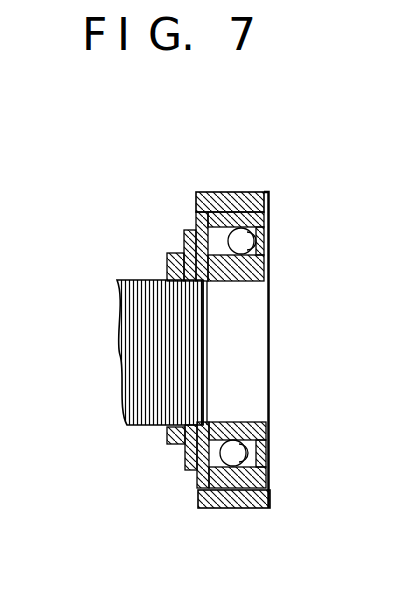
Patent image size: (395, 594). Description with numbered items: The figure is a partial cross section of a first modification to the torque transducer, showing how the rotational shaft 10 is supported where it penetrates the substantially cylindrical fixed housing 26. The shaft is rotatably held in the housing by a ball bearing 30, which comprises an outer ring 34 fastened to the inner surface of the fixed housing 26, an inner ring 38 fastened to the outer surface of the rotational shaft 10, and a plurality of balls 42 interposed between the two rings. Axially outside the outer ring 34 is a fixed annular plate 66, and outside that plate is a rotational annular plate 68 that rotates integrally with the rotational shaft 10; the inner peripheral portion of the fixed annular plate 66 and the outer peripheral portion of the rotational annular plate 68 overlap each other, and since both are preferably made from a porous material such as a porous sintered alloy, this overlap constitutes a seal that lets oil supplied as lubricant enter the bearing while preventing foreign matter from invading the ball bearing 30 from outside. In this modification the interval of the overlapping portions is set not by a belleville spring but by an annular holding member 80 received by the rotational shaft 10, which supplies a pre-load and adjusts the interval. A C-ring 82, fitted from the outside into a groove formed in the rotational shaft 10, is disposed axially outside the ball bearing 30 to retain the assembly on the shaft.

The rotational shaft 10 is at (122, 352).
The fixed housing 26 is at (250, 192).
The ball bearing 30 is at (245, 510).
The outer ring 34 is at (262, 478).
The inner ring 38 is at (262, 438).
The balls 42 is at (245, 453).
The fixed annular plate 66 is at (195, 214).
The rotational annular plate 68 is at (183, 237).
The annular holding member 80 is at (160, 258).
The C-ring 82 is at (206, 283).